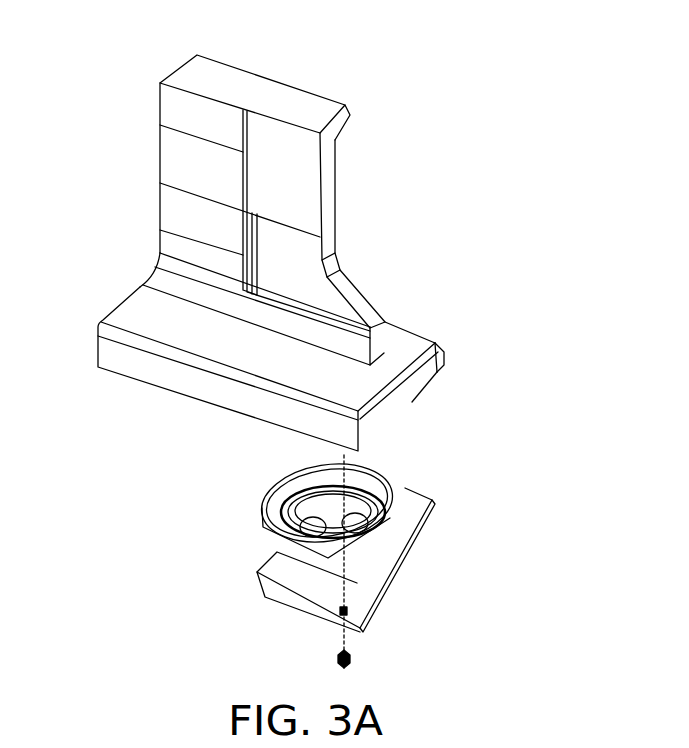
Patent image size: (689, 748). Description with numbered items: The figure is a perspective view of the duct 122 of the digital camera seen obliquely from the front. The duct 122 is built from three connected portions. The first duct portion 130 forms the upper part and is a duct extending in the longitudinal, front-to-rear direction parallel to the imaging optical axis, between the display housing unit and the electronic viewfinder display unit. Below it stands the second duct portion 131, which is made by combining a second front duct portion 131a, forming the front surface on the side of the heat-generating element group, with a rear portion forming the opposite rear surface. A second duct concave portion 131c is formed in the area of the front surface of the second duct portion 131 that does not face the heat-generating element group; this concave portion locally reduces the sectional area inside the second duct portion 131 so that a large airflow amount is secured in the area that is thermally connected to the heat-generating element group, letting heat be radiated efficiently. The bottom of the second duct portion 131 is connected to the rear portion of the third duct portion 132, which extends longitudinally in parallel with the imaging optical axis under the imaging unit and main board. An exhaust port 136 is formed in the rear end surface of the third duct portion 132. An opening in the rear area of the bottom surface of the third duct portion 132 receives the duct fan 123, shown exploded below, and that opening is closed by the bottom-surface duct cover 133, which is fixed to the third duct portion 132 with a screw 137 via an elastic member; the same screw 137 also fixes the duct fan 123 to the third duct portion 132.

The duct 122 is at (433, 78).
The first duct portion 130 is at (305, 99).
The second duct portion 131 is at (330, 200).
The second front duct portion 131a is at (177, 205).
The second duct concave portion 131c is at (300, 276).
The third duct portion 132 is at (190, 387).
The exhaust port 136 is at (447, 370).
The duct fan 123 is at (398, 495).
The bottom-surface duct cover 133 is at (420, 553).
The screw 137 is at (350, 660).